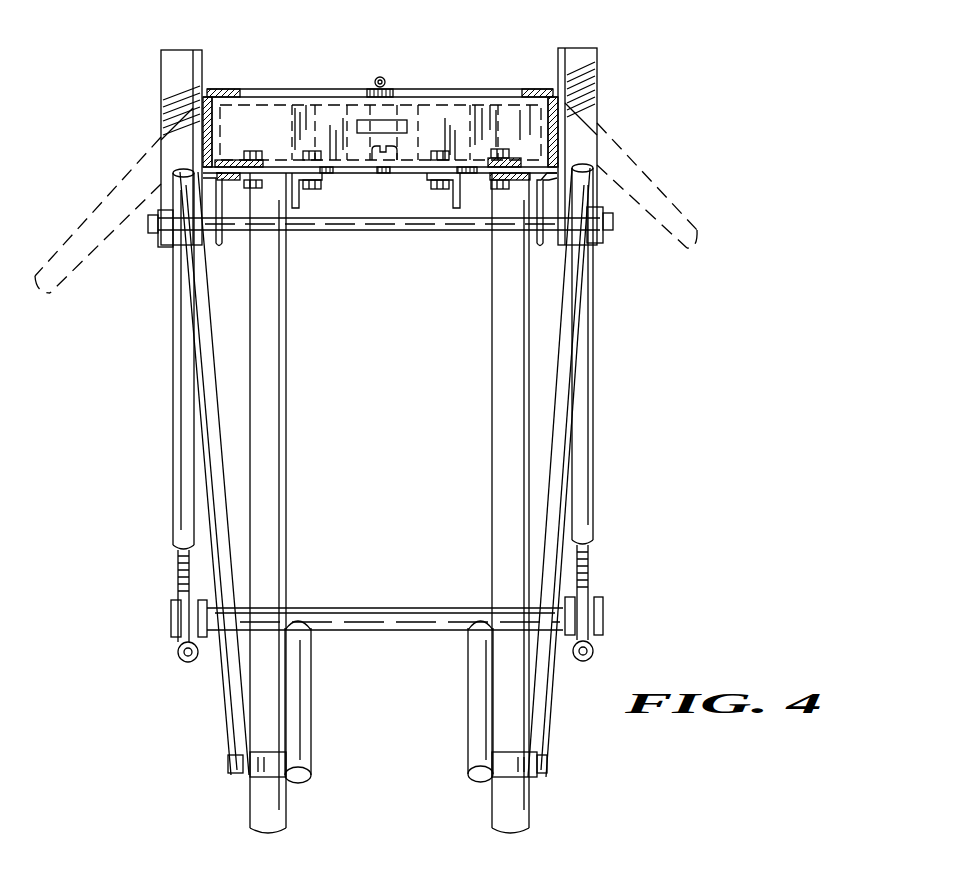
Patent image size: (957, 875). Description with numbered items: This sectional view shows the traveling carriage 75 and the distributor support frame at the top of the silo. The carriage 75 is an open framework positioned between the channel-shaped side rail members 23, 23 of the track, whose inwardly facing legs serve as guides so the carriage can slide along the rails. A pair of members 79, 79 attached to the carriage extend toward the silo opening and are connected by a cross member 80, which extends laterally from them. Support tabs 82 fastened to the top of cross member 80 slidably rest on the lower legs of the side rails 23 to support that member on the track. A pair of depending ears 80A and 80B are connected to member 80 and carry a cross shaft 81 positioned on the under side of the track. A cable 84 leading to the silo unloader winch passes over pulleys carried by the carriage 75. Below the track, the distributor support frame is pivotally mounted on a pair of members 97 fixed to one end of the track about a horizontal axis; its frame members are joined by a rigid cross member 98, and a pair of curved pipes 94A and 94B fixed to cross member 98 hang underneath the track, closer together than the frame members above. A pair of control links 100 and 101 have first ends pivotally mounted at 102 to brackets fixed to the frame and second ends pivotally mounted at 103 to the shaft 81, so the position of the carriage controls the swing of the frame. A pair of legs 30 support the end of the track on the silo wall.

The member 97 is at (161, 88).
The side rail member 23 is at (212, 95).
The cable 84 is at (380, 86).
The traveling carriage 75 is at (450, 108).
The support tab 82 is at (232, 160).
The cross member 80 is at (348, 176).
The member 79 is at (298, 198).
The cross shaft 81 is at (420, 231).
The pivotal mounting 103 is at (161, 238).
The depending ear 80A is at (219, 246).
The depending ear 80B is at (540, 247).
The control link 100 is at (584, 464).
The control link 101 is at (174, 517).
The leg 30 is at (510, 496).
The rigid cross member 98 is at (428, 620).
The pivotal mounting 102 is at (172, 605).
The curved pipe 94A is at (312, 735).
The curved pipe 94B is at (473, 715).